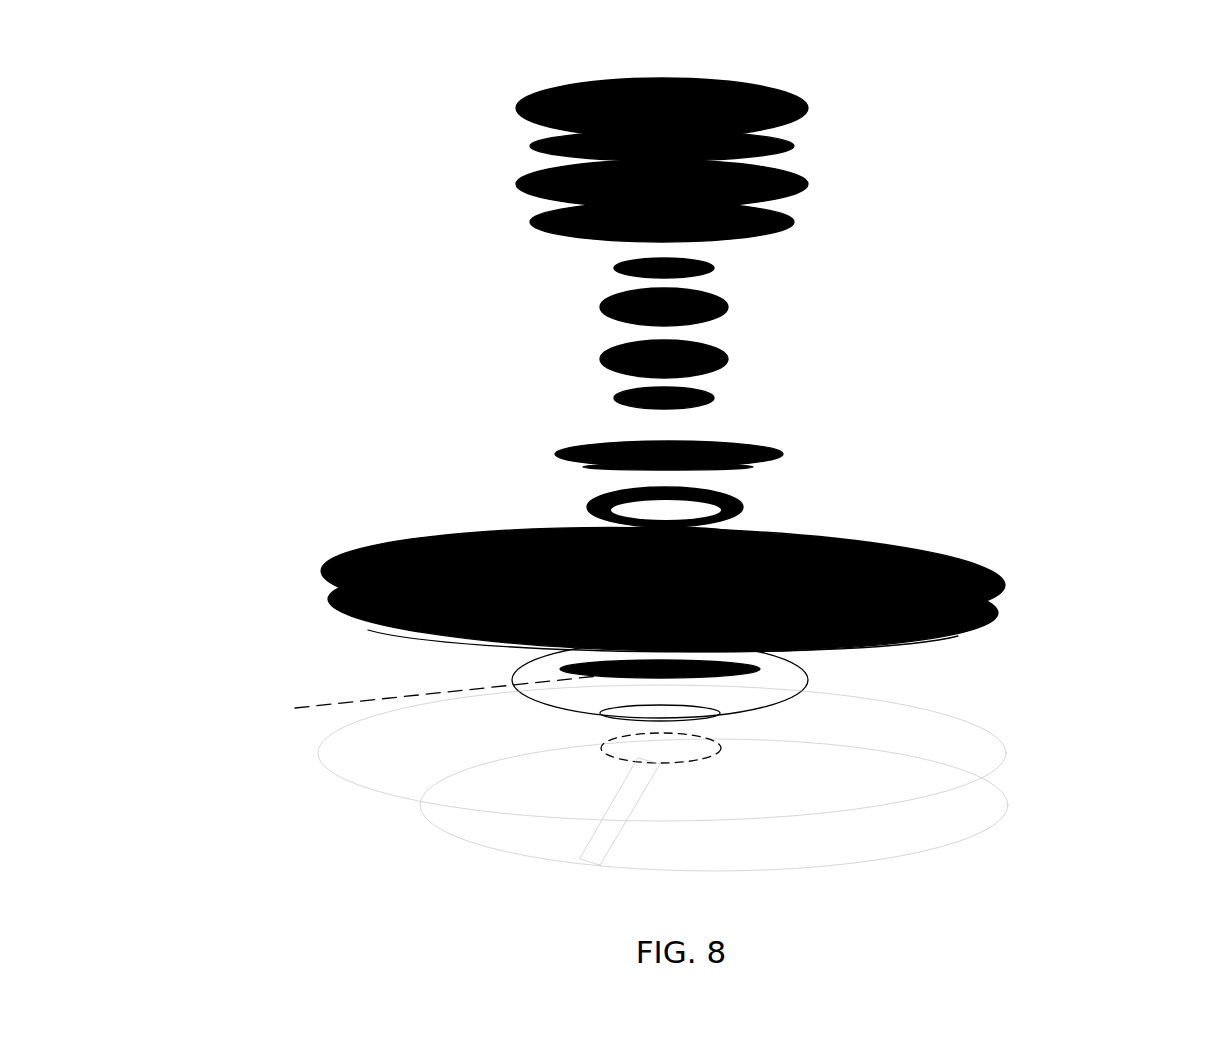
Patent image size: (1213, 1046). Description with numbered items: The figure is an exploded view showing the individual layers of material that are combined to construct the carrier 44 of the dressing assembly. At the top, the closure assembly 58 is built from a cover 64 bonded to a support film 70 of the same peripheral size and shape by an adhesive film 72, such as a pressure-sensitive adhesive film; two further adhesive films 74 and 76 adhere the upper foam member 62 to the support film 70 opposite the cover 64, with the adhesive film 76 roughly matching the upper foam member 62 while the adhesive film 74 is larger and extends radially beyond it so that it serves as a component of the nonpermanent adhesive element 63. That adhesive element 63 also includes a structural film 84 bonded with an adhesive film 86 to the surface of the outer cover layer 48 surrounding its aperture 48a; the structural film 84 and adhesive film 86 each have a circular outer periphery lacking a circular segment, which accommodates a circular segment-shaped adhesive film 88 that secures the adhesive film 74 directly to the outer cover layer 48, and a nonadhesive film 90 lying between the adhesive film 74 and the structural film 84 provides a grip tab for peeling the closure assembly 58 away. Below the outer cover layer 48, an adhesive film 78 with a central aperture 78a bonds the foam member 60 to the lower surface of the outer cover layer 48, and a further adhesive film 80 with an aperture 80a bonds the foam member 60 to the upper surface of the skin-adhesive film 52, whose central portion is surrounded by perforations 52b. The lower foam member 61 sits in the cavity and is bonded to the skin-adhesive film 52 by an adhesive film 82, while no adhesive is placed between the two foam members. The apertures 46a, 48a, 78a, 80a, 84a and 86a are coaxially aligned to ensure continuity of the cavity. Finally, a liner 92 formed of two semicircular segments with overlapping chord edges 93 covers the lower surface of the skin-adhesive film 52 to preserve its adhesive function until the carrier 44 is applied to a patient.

The carrier 44 is at (697, 477).
The closure assembly 58 is at (659, 184).
The cover 64 is at (533, 85).
The adhesive film 72 is at (528, 135).
The support film 70 is at (515, 187).
The adhesive film 74 is at (533, 218).
The adhesive film 76 is at (615, 262).
The upper foam member 62 is at (622, 303).
The lower foam member 61 is at (693, 349).
The adhesive film 82 is at (615, 393).
The nonpermanent adhesive element 63 is at (668, 462).
The adhesive film 88 is at (700, 430).
The nonadhesive film 90 is at (580, 452).
The structural film 84 is at (768, 516).
The central aperture 84a is at (608, 498).
The adhesive film 86 is at (760, 548).
The central aperture 86a is at (615, 530).
The outer cover layer 48 is at (313, 563).
The aperture 48a is at (630, 577).
The adhesive film 78 is at (325, 600).
The central aperture 78a is at (625, 625).
The foam member 60 is at (748, 675).
The adhesive film 80 is at (780, 703).
The aperture 80a is at (667, 707).
The aperture 46a is at (445, 692).
The skin-adhesive film 52 is at (333, 728).
The perforations 52b is at (593, 742).
The liner 92 is at (604, 850).
The overlapping chord edges 93 is at (583, 805).